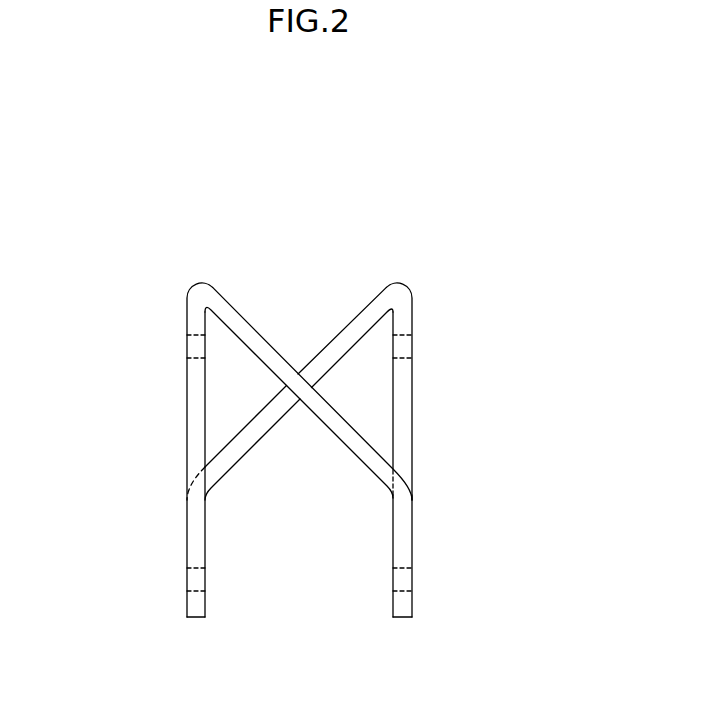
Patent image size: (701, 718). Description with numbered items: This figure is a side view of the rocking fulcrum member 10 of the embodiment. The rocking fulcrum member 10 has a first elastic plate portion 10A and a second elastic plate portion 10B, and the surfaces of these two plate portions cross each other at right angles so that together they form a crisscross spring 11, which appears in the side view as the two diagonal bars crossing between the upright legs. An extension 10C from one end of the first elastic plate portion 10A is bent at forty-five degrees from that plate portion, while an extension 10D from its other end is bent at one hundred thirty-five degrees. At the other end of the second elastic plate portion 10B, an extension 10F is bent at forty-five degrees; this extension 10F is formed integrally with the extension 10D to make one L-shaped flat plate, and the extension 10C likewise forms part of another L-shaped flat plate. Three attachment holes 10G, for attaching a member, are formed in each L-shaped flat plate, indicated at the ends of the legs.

The rocking fulcrum member 10 is at (412, 175).
The crisscross spring 11 is at (328, 285).
The first elastic plate portion 10A is at (263, 345).
The second elastic plate portion 10B is at (260, 425).
The extension 10C is at (187, 420).
The extension 10D is at (412, 532).
The extension 10F is at (412, 421).
The attachment holes 10G is at (187, 338).